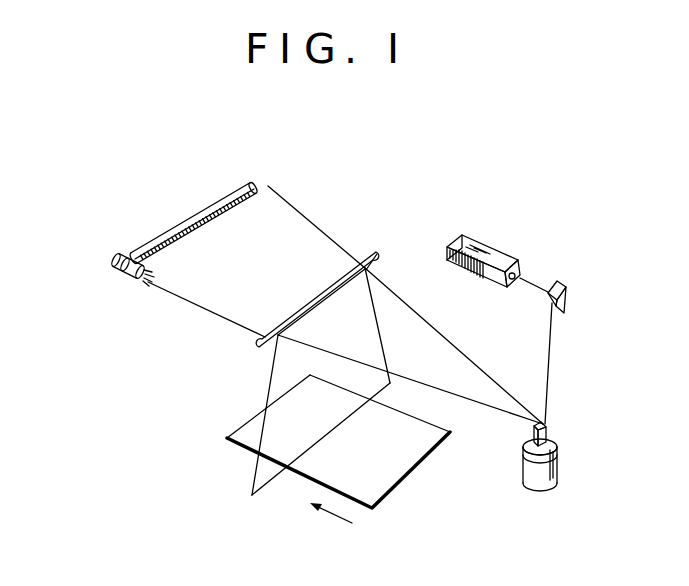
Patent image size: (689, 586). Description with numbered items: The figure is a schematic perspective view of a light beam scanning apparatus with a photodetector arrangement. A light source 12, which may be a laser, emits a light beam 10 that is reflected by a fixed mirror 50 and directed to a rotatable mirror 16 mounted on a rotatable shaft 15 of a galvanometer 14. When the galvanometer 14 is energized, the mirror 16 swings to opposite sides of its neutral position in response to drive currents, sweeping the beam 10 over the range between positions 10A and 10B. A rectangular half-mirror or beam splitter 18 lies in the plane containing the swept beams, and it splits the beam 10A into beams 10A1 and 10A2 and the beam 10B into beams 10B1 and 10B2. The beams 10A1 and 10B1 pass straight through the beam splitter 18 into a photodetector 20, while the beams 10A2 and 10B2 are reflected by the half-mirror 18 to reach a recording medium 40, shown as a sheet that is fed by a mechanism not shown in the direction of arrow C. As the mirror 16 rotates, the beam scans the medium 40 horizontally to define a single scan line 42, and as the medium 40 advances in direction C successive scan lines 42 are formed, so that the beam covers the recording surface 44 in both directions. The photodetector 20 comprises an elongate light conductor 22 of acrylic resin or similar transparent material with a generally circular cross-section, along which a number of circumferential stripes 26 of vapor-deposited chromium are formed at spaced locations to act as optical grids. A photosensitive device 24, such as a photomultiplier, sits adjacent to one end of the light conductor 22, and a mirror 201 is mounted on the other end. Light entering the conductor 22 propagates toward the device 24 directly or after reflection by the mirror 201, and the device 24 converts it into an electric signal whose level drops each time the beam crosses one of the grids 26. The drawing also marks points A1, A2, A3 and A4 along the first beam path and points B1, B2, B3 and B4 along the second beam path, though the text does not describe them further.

The light beam 10 is at (548, 357).
The swept beam position 10A is at (463, 400).
The transmitted beam 10A1 is at (170, 294).
The reflected beam 10A2 is at (268, 390).
The swept beam position 10B is at (438, 336).
The transmitted beam 10B1 is at (328, 235).
The reflected beam 10B2 is at (382, 325).
The light source 12 is at (472, 236).
The galvanometer 14 is at (548, 488).
The rotatable shaft 15 is at (546, 458).
The rotatable mirror 16 is at (548, 429).
The half-mirror or beam splitter 18 is at (380, 258).
The photodetector 20 is at (156, 217).
The mirror 201 is at (261, 197).
The elongate light conductor 22 is at (193, 215).
The photosensitive device 24 is at (110, 267).
The stripes 26 is at (179, 229).
The recording medium 40 is at (391, 495).
The scan line 42 is at (270, 481).
The recording surface 44 is at (407, 456).
The fixed mirror 50 is at (566, 294).
The point A1 is at (143, 299).
The point A2 is at (237, 505).
The point A3 is at (287, 468).
The point A4 is at (138, 253).
The point B1 is at (270, 182).
The point B2 is at (407, 402).
The point B3 is at (368, 397).
The point B4 is at (249, 181).
The arrow indicating sheet feed direction C is at (331, 528).